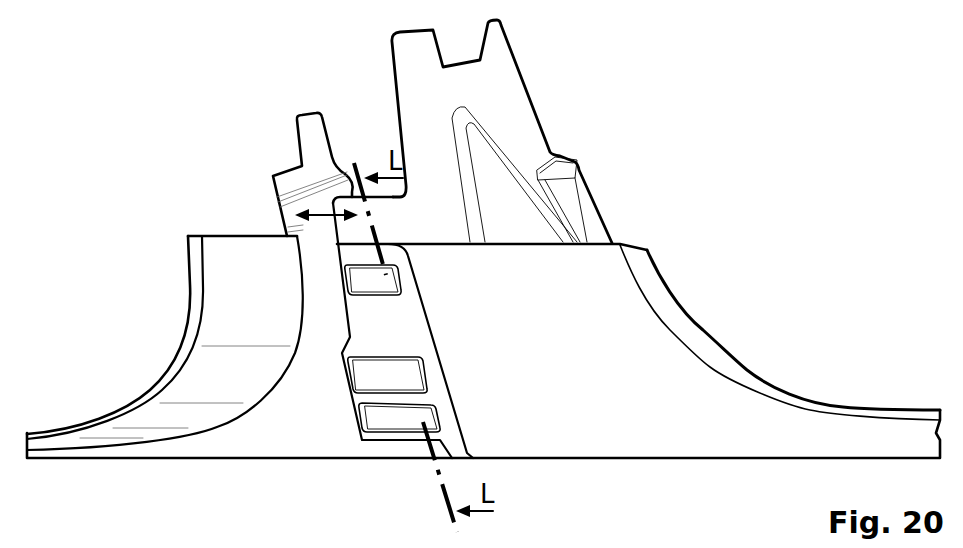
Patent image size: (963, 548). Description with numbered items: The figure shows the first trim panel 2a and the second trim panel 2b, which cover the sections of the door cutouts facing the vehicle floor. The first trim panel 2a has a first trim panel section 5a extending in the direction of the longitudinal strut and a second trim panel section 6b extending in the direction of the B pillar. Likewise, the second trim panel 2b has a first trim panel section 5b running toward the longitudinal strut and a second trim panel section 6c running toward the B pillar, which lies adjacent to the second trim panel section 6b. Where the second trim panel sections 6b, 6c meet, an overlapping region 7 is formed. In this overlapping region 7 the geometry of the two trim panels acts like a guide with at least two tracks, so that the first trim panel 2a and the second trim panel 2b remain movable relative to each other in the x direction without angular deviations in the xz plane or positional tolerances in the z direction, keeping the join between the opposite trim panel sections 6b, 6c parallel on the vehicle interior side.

The first trim panel 2a is at (638, 298).
The second trim panel 2b is at (165, 294).
The first trim panel section 5a is at (800, 423).
The first trim panel section 5b is at (53, 453).
The second trim panel section 6b is at (523, 117).
The second trim panel section 6c is at (297, 443).
The overlapping region 7 is at (400, 323).